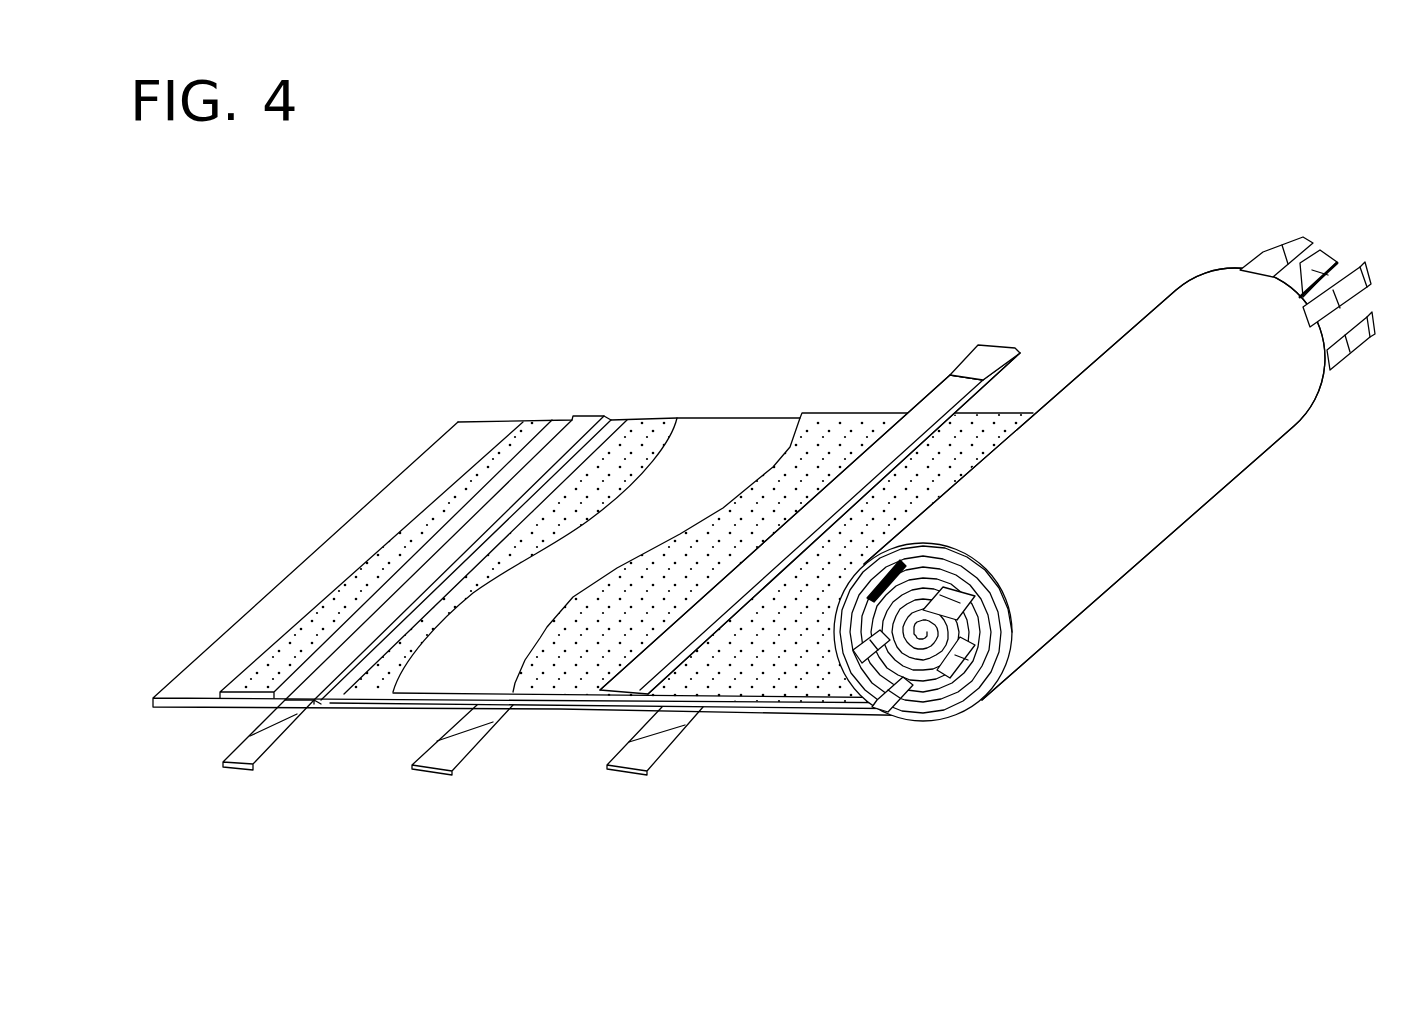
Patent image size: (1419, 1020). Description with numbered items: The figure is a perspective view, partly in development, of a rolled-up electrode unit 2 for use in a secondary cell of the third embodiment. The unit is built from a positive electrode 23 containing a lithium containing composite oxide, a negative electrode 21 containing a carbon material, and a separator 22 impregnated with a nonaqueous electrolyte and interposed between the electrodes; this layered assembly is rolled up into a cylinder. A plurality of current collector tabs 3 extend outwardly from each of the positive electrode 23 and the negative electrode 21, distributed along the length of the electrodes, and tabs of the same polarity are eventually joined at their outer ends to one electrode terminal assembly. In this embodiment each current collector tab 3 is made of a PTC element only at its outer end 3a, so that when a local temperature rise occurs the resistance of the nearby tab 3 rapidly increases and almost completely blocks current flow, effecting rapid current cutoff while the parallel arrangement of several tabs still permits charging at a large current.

The rolled-up electrode unit 2 is at (1170, 568).
The current collector tab 3 is at (930, 408).
The outer end 3a is at (978, 356).
The negative electrode 21 is at (523, 440).
The separator 22 is at (425, 468).
The positive electrode 23 is at (840, 438).